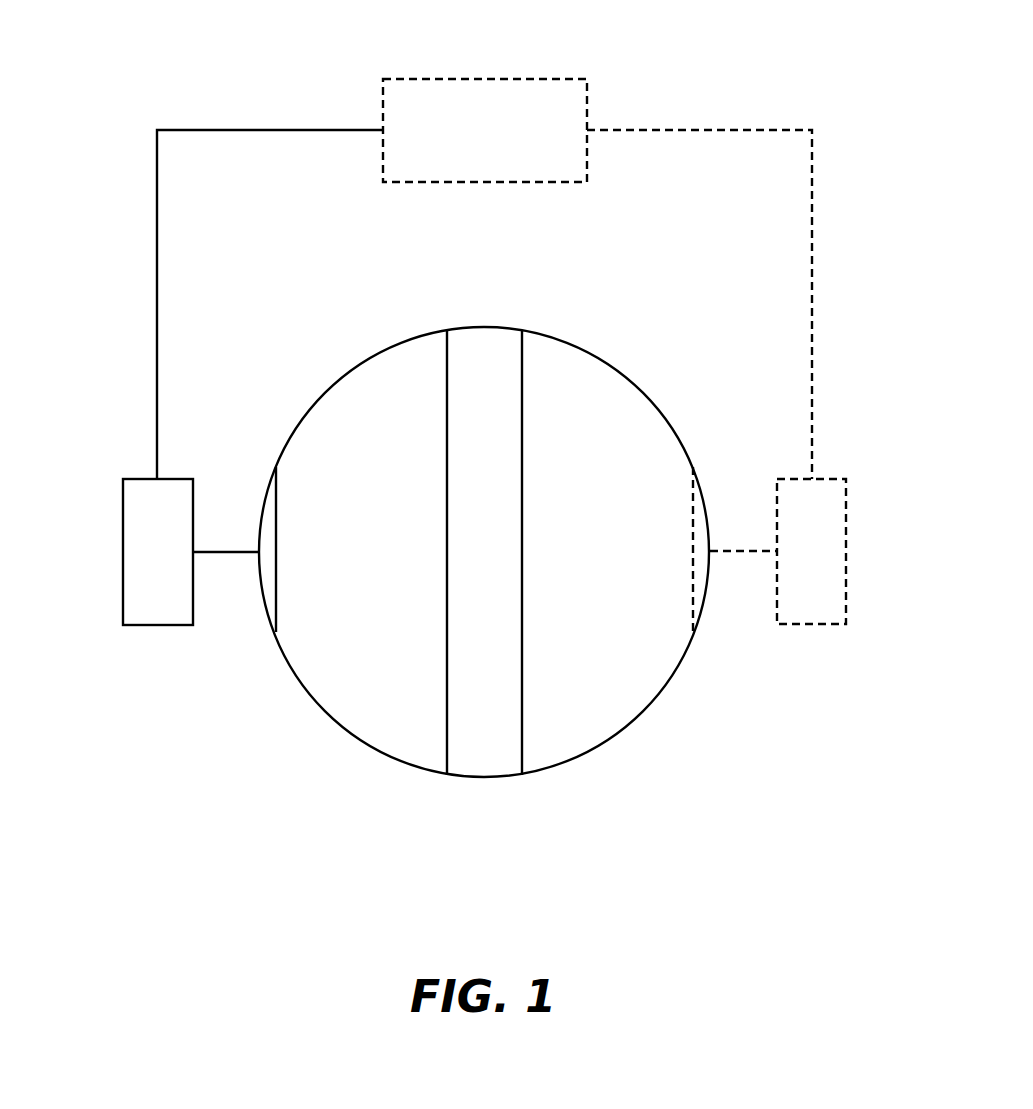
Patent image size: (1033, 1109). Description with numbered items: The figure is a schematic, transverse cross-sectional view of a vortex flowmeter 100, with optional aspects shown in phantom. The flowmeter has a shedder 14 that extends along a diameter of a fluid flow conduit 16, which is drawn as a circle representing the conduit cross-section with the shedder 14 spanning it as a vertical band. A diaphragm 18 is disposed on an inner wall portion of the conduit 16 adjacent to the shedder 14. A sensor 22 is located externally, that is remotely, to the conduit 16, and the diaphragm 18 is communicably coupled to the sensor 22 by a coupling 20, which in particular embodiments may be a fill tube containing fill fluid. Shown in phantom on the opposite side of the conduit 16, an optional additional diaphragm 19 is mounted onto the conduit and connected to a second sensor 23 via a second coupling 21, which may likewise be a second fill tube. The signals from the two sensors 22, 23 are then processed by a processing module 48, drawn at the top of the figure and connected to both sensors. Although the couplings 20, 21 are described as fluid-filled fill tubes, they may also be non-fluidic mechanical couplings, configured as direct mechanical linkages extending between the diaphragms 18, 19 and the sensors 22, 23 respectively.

The vortex flowmeter 100 is at (150, 62).
The processing module 48 is at (424, 87).
The shedder 14 is at (446, 367).
The fluid flow conduit 16 is at (574, 342).
The diaphragm 18 is at (276, 585).
The additional diaphragm 19 is at (693, 585).
The coupling 20 is at (235, 552).
The second coupling 21 is at (752, 551).
The sensor 22 is at (130, 510).
The second sensor 23 is at (840, 512).